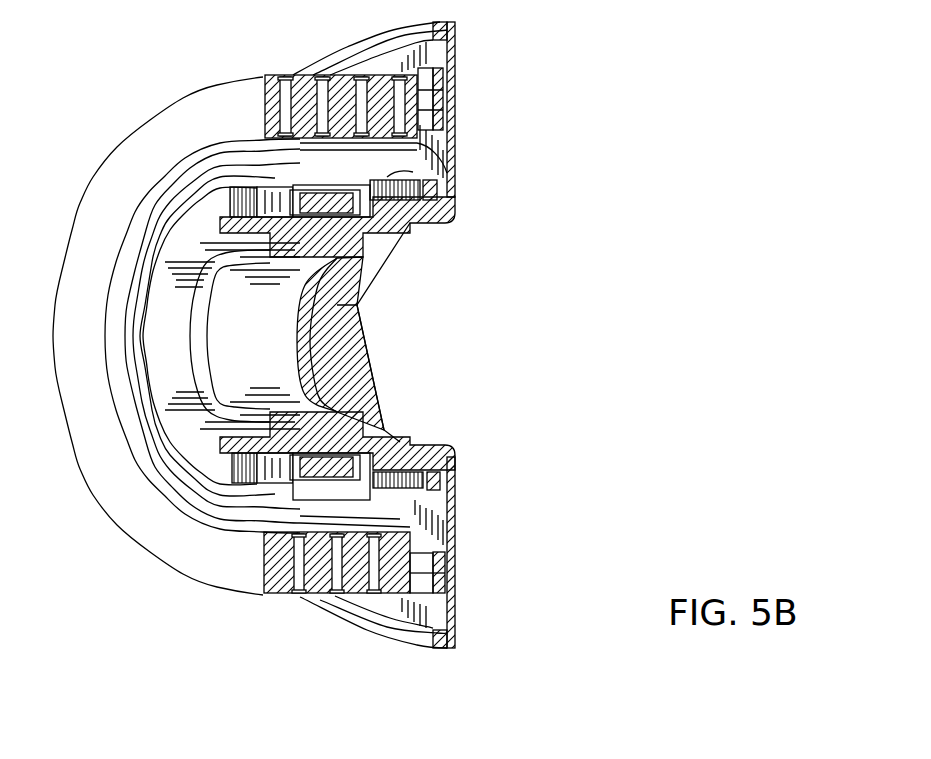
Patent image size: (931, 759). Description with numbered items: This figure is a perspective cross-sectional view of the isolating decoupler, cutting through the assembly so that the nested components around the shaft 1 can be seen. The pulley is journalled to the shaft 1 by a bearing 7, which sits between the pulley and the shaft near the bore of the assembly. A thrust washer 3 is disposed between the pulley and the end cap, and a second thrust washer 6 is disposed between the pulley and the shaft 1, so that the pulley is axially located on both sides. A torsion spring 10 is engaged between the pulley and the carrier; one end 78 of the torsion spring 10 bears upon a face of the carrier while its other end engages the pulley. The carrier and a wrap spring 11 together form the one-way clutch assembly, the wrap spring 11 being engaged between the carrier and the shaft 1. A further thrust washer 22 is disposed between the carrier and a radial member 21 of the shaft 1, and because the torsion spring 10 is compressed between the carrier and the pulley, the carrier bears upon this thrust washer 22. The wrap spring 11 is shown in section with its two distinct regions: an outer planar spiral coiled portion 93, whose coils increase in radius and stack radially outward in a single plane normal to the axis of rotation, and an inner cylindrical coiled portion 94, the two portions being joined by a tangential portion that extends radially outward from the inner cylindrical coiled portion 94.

The shaft 1 is at (455, 215).
The thrust washer 3 is at (227, 468).
The thrust washer 6 is at (267, 500).
The bearing 7 is at (333, 417).
The torsion spring 10 is at (137, 502).
The wrap spring 11 is at (417, 508).
The radial member 21 is at (457, 45).
The thrust washer 22 is at (430, 152).
The end of torsion spring 78 is at (407, 93).
The outer planar spiral coiled portion 93 is at (440, 575).
The inner cylindrical coiled portion 94 is at (430, 168).